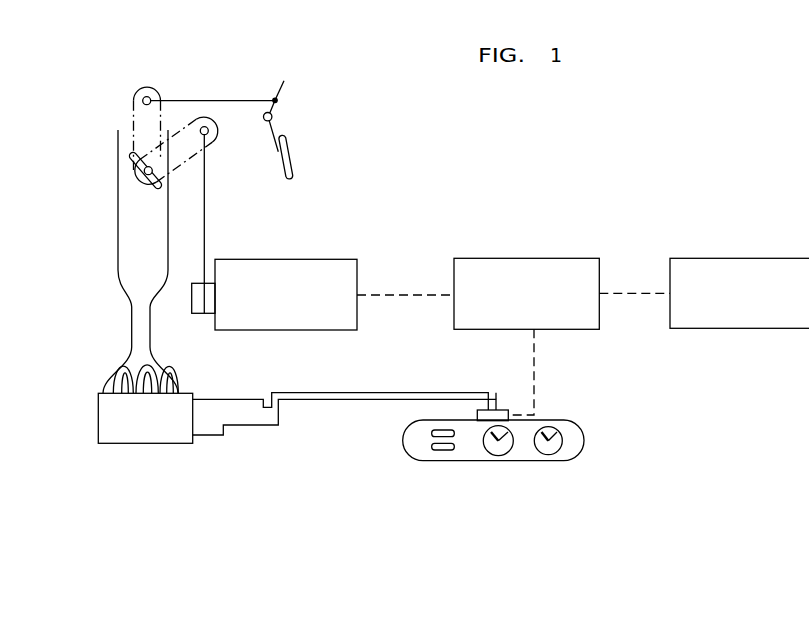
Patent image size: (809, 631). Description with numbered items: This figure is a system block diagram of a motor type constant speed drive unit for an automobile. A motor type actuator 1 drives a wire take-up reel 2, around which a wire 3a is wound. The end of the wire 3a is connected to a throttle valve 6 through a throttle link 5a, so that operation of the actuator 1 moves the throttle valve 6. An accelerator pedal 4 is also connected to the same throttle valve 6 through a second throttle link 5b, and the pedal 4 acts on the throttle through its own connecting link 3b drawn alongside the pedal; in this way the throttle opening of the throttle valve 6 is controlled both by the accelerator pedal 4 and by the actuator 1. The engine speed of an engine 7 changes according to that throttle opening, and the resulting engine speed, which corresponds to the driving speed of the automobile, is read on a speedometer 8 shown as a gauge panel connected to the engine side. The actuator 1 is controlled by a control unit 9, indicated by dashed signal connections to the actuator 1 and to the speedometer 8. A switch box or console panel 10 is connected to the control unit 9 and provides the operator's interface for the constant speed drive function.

The motor type actuator 1 is at (292, 330).
The wire take-up reel 2 is at (192, 314).
The wire 3a is at (205, 200).
The pedal link rod 3b is at (225, 99).
The accelerator pedal 4 is at (289, 146).
The throttle link 5a is at (208, 132).
The throttle link 5b is at (147, 86).
The throttle valve 6 is at (118, 168).
The engine 7 is at (147, 443).
The speedometer 8 is at (478, 461).
The control unit 9 is at (493, 329).
The switch box or console panel 10 is at (742, 328).